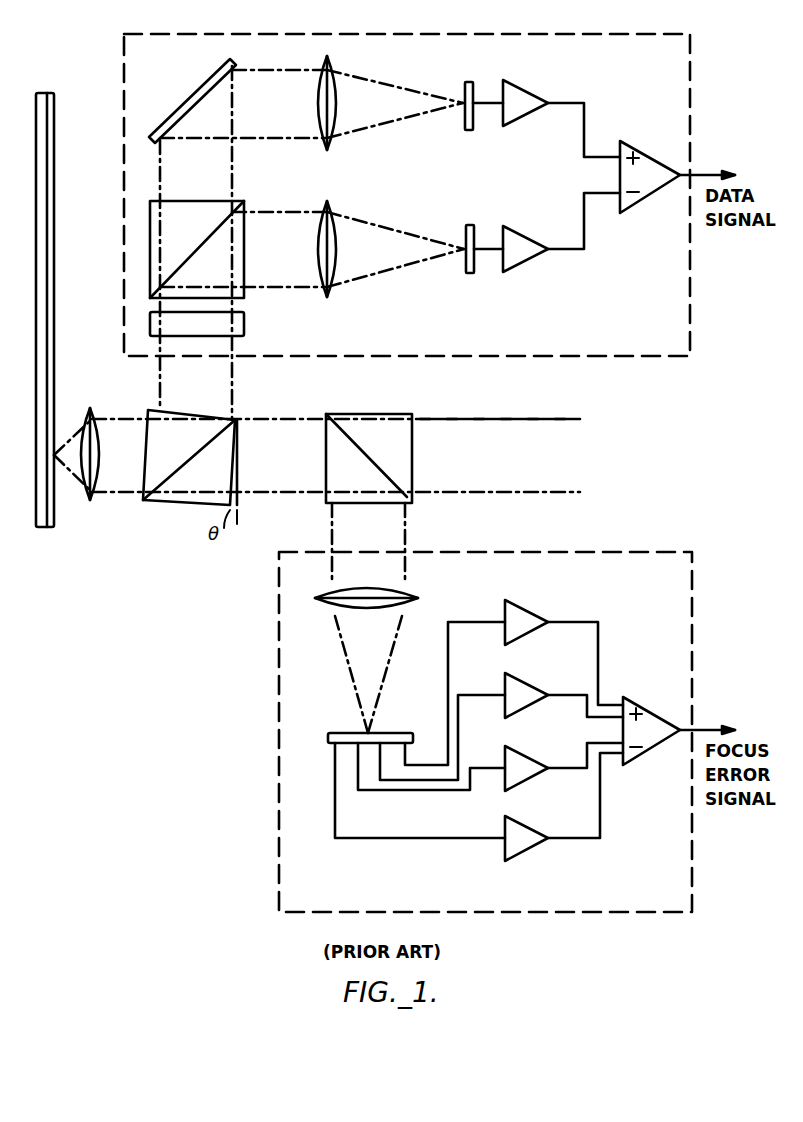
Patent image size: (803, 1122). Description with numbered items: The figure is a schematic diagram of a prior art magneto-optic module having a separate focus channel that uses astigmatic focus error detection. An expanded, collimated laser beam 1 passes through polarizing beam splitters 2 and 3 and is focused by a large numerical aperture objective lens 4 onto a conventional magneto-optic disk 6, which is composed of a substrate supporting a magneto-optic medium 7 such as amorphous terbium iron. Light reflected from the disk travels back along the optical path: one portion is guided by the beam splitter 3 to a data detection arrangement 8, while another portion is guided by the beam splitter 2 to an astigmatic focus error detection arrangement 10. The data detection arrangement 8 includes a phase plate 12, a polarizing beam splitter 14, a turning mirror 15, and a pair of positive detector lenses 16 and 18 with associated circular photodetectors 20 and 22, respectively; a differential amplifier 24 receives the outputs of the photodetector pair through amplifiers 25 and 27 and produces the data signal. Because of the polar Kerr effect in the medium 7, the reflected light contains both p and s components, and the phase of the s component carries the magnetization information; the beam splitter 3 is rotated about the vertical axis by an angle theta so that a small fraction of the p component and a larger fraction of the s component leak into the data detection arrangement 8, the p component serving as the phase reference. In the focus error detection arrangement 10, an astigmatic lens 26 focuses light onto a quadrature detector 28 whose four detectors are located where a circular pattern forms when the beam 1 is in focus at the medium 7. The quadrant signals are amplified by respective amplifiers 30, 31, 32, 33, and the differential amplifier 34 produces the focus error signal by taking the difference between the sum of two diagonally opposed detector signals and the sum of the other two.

The laser beam 1 is at (514, 429).
The polarizing beam splitter 2 is at (392, 413).
The polarizing beam splitter 3 is at (165, 508).
The objective lens 4 is at (97, 492).
The magneto-optic disk 6 is at (56, 92).
The magneto-optic medium 7 is at (55, 292).
The data detection arrangement 8 is at (278, 34).
The astigmatic focus error detection arrangement 10 is at (590, 552).
The phase plate 12 is at (244, 322).
The polarizing beam splitter 14 is at (228, 200).
The turning mirror 15 is at (190, 100).
The positive detector lens 16 is at (338, 130).
The positive detector lens 18 is at (338, 277).
The circular photodetector 20 is at (462, 90).
The circular photodetector 22 is at (463, 234).
The differential amplifier 24 is at (640, 150).
The amplifier 25 is at (515, 86).
The astigmatic lens 26 is at (408, 592).
The amplifier 27 is at (515, 232).
The quadrature detector 28 is at (326, 740).
The amplifier 30 is at (518, 606).
The amplifier 31 is at (518, 679).
The amplifier 32 is at (518, 752).
The amplifier 33 is at (518, 822).
The differential amplifier 34 is at (643, 705).